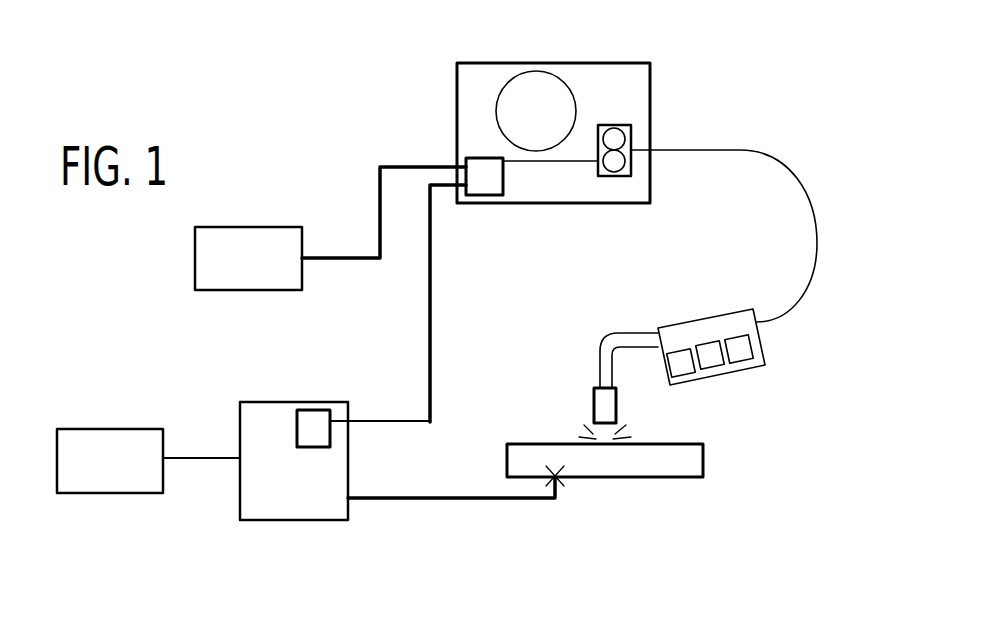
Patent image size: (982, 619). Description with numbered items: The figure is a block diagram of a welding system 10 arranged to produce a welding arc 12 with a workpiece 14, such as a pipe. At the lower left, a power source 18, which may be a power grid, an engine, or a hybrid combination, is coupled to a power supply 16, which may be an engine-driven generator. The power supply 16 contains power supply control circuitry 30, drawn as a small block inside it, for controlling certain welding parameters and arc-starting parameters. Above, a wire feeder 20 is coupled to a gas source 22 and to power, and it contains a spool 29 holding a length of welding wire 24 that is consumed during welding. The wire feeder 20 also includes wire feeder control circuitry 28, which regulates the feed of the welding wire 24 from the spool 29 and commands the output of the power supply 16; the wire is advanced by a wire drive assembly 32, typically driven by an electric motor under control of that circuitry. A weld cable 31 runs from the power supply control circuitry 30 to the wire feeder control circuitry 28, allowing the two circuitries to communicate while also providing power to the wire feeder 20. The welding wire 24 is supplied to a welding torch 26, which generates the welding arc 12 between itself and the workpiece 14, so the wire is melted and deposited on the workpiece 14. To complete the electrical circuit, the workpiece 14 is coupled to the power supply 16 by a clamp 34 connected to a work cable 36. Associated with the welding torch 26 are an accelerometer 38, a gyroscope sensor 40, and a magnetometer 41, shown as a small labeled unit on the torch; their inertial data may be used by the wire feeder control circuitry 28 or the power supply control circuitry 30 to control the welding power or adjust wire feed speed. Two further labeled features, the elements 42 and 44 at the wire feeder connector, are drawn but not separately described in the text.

The welding system 10 is at (753, 73).
The welding arc 12 is at (592, 420).
The workpiece 14 is at (703, 460).
The power supply 16 is at (295, 402).
The power source 18 is at (110, 429).
The wire feeder 20 is at (553, 63).
The gas source 22 is at (243, 227).
The welding wire 24 is at (640, 150).
The welding torch 26 is at (724, 347).
The wire feeder control circuitry 28 is at (503, 180).
The spool 29 is at (510, 82).
The power supply control circuitry 30 is at (313, 410).
The weld cable 31 is at (432, 302).
The wire drive assembly 32 is at (617, 172).
The clamp 34 is at (559, 484).
The work cable 36 is at (453, 503).
The accelerometer 38 is at (717, 372).
The gyroscope sensor 40 is at (757, 345).
The magnetometer 41 is at (677, 340).
The connector terminal 42 is at (617, 177).
The connector terminal 44 is at (614, 128).